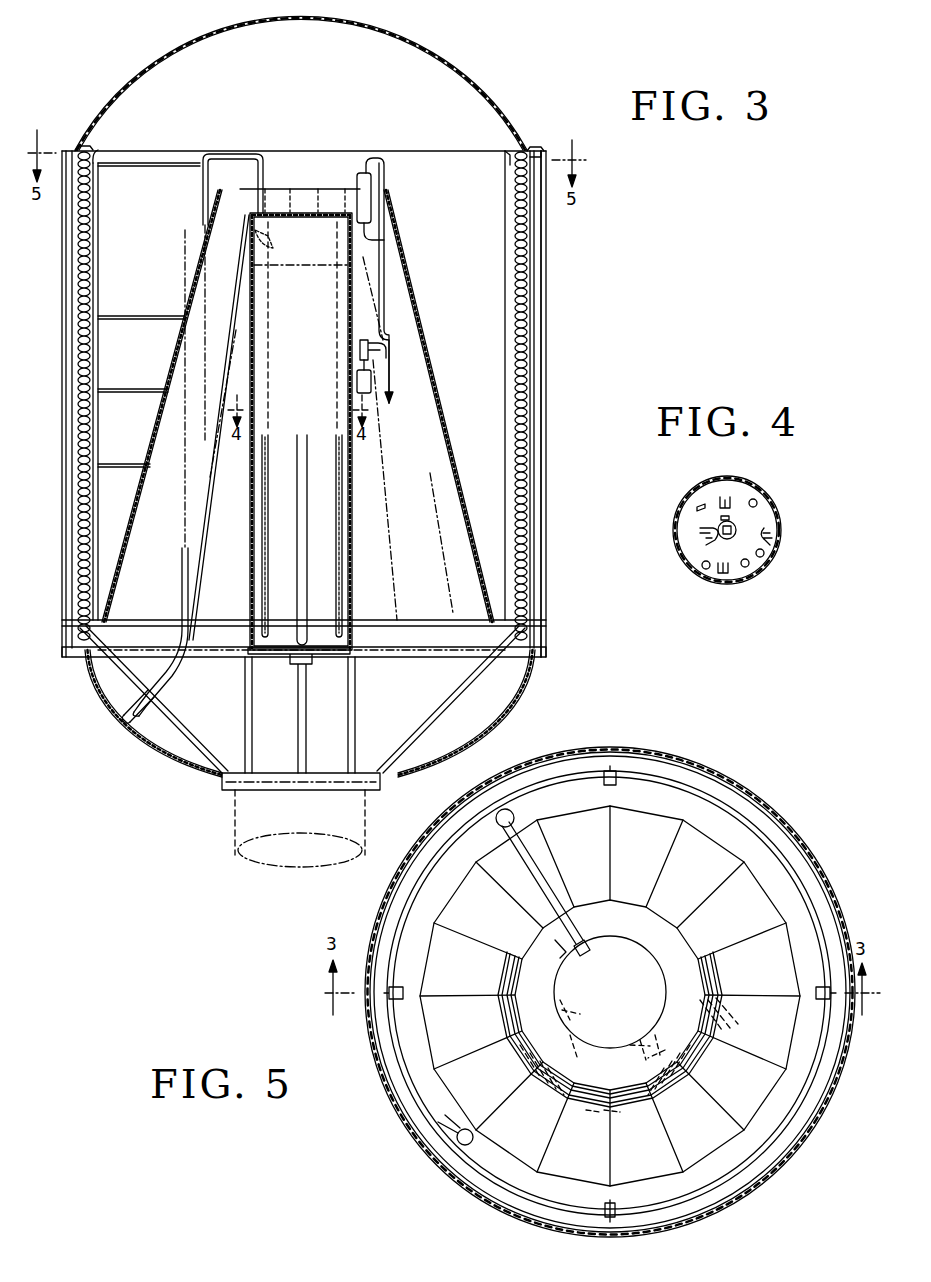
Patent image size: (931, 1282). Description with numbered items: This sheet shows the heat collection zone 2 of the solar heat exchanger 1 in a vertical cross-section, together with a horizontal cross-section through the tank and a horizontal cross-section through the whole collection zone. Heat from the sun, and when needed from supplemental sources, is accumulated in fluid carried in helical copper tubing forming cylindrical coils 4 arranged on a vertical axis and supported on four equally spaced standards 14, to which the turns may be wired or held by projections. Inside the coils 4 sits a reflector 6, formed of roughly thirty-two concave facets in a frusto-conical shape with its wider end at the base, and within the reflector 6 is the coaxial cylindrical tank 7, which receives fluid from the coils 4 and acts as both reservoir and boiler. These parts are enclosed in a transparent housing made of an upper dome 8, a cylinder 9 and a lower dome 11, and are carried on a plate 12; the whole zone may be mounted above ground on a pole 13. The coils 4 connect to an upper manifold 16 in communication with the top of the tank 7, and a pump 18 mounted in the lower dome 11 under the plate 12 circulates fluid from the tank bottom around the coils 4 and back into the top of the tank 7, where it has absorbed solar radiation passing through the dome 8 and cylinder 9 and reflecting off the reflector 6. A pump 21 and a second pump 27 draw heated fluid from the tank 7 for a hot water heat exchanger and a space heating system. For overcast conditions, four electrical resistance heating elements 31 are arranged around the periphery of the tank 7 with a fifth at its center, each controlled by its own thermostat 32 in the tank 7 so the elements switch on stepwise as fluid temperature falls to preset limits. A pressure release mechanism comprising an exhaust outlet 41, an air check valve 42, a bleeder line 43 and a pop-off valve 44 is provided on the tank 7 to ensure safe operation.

In FIG. 3, the solar heat exchanger 1 is at (125, 58).
In FIG. 3, the heat collection zone 2 is at (466, 104).
In FIG. 5, the heat collection zone 2 is at (724, 795).
In FIG. 3, the cylindrical coils 4 is at (507, 299).
In FIG. 5, the cylindrical coils 4 is at (392, 905).
In FIG. 3, the reflector 6 is at (405, 250).
In FIG. 5, the reflector 6 is at (725, 848).
In FIG. 3, the cylindrical tank 7 is at (302, 333).
In FIG. 4, the cylindrical tank 7 is at (690, 495).
In FIG. 5, the cylindrical tank 7 is at (628, 952).
In FIG. 3, the upper dome 8 is at (446, 55).
In FIG. 3, the cylinder 9 is at (542, 500).
In FIG. 5, the cylinder 9 is at (405, 1133).
In FIG. 3, the lower dome 11 is at (158, 762).
In FIG. 3, the plate 12 is at (375, 622).
In FIG. 3, the pole 13 is at (232, 818).
In FIG. 3, the standards 14 is at (100, 150).
In FIG. 5, the standards 14 is at (616, 785).
In FIG. 3, the upper manifold 16 is at (200, 190).
In FIG. 5, the upper manifold 16 is at (514, 815).
In FIG. 5, the pump 18 is at (590, 1090).
In FIG. 5, the pump 21 is at (672, 1090).
In FIG. 5, the second pump 27 is at (688, 1015).
In FIG. 3, the electrical resistance heating elements 31 is at (304, 435).
In FIG. 4, the electrical resistance heating elements 31 is at (733, 530).
In FIG. 4, the thermostat 32 is at (713, 518).
In FIG. 3, the exhaust outlet 41 is at (186, 682).
In FIG. 5, the exhaust outlet 41 is at (560, 955).
In FIG. 3, the air check valve 42 is at (355, 183).
In FIG. 3, the bleeder line 43 is at (387, 184).
In FIG. 3, the pop-off valve 44 is at (357, 353).